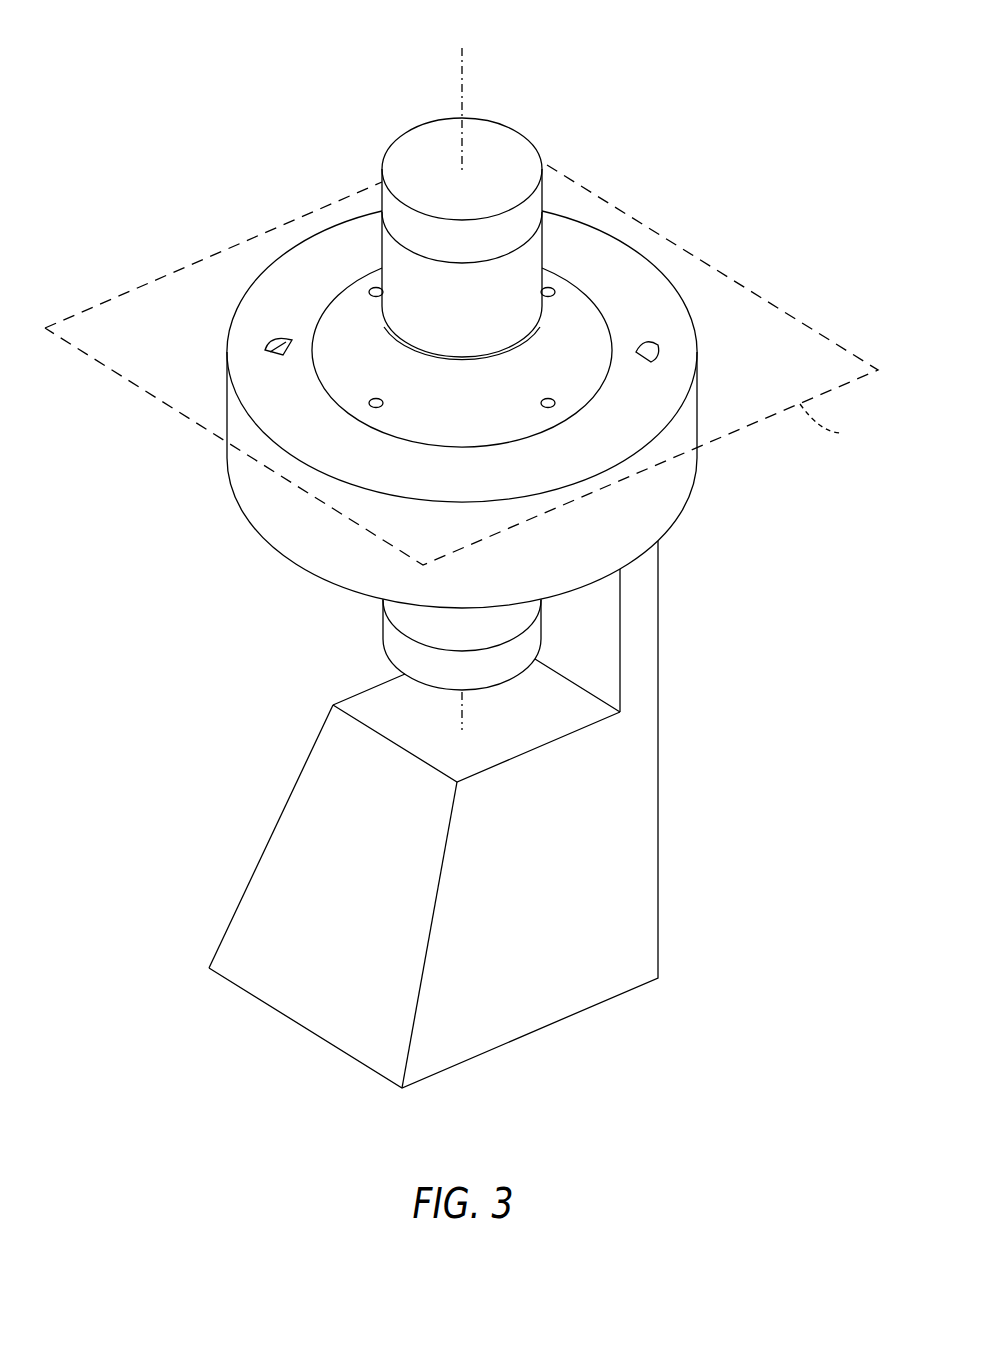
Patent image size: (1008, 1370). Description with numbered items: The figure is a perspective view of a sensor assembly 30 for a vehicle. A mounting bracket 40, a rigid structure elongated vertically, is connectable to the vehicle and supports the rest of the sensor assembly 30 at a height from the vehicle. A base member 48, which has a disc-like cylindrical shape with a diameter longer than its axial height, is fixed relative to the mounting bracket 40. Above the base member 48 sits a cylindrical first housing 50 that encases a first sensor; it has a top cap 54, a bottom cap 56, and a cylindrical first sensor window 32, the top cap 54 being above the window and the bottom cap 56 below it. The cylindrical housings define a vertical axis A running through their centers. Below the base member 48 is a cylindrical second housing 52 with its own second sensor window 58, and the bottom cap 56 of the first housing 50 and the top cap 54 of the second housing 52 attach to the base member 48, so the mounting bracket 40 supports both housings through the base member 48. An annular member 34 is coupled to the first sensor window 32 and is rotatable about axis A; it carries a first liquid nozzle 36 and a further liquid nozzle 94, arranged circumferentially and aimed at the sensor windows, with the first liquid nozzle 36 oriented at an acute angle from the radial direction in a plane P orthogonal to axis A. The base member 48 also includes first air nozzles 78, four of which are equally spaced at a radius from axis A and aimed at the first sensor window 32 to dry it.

The sensor assembly 30 is at (735, 134).
The first sensor window 32 is at (382, 247).
The annular member 34 is at (227, 392).
The first liquid nozzle 36 is at (276, 336).
The mounting bracket 40 is at (660, 832).
The base member 48 is at (327, 387).
The first housing 50 is at (393, 147).
The second housing 52 is at (418, 683).
The top cap 54 is at (545, 195).
The bottom cap 56 is at (548, 330).
The second sensor window 58 is at (405, 636).
The first air nozzles 78 is at (376, 288).
The liquid nozzle 94 is at (652, 343).